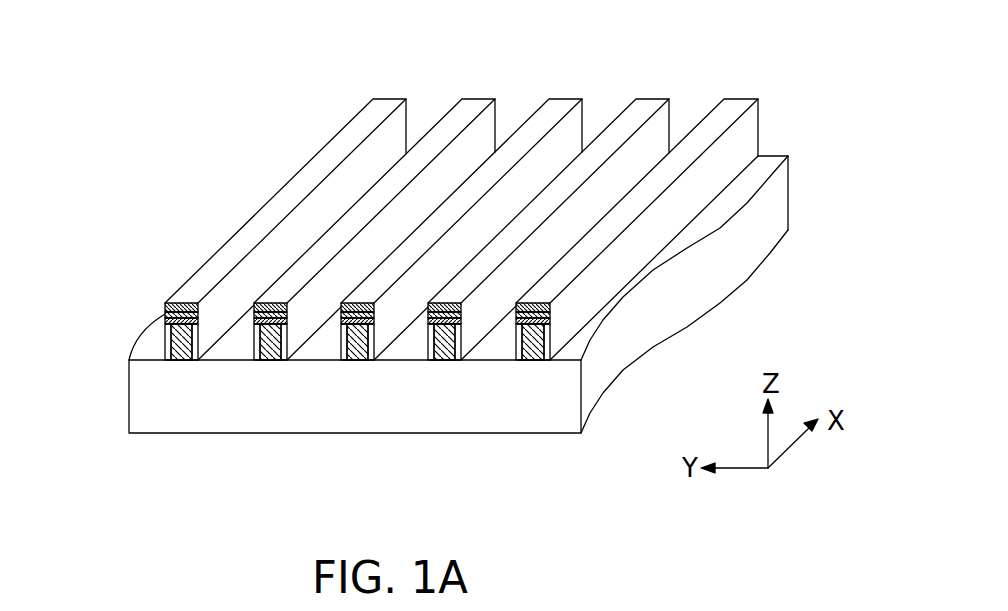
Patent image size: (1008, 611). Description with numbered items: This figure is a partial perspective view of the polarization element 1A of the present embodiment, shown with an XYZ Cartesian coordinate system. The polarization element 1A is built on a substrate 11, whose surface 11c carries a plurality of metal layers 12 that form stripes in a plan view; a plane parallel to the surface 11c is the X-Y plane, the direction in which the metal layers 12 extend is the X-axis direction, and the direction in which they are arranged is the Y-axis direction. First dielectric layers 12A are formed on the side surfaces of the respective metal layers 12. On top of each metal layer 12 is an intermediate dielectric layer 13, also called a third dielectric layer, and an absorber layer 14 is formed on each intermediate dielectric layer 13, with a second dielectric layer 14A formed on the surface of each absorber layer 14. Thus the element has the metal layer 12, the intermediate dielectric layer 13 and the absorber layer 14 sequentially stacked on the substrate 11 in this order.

The polarization element 1A is at (622, 66).
The substrate 11 is at (635, 344).
The surface of substrate 11c is at (493, 353).
The metal layer 12 is at (180, 360).
The first dielectric layer 12A is at (167, 352).
The intermediate dielectric layer 13 is at (163, 322).
The absorber layer 14 is at (183, 303).
The second dielectric layer 14A is at (163, 313).